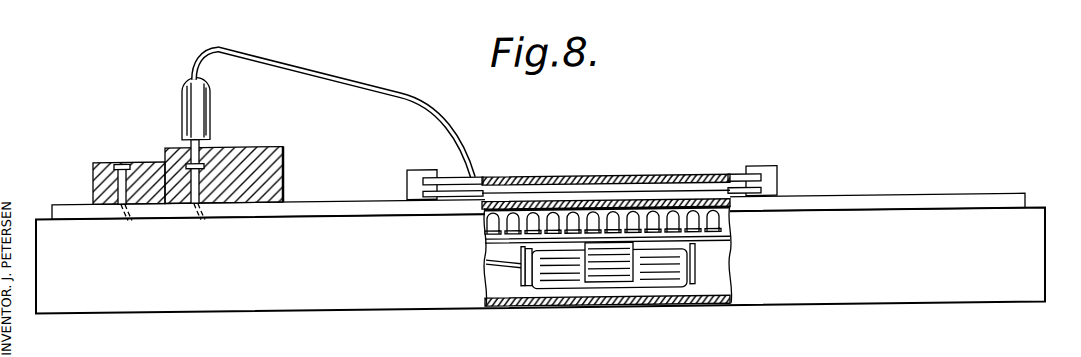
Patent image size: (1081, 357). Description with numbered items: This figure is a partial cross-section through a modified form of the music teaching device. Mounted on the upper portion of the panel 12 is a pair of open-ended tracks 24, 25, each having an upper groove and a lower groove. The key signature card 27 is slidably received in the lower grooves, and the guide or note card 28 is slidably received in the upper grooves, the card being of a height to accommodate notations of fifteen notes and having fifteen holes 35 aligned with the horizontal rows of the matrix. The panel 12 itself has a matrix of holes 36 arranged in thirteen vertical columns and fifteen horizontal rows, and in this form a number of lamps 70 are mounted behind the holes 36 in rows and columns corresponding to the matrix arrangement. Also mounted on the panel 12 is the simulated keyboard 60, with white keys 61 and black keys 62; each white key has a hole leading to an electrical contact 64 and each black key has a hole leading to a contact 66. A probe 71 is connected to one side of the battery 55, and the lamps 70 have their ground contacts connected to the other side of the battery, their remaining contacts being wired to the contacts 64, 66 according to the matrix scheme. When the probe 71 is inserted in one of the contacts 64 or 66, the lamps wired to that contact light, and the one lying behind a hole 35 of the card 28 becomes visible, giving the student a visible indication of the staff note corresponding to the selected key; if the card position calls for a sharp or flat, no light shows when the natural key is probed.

The panel 12 is at (619, 210).
The track 24 is at (410, 187).
The track 25 is at (772, 180).
The key signature card 27 is at (765, 200).
The guide or note card 28 is at (684, 183).
The holes 35 is at (606, 150).
The holes 36 is at (603, 184).
The battery 55 is at (666, 292).
The simulated keyboard 60 is at (227, 148).
The white keys 61 is at (97, 170).
The black keys 62 is at (172, 152).
The contact 64 is at (122, 165).
The contact 66 is at (201, 153).
The lamps 70 is at (662, 218).
The probe 71 is at (204, 100).